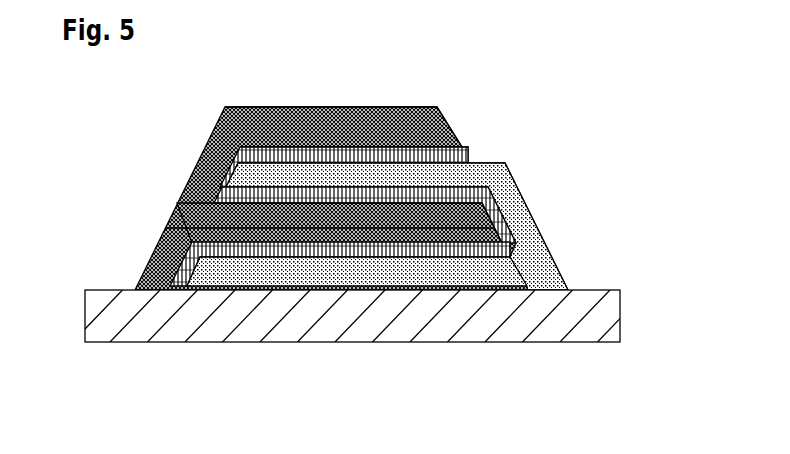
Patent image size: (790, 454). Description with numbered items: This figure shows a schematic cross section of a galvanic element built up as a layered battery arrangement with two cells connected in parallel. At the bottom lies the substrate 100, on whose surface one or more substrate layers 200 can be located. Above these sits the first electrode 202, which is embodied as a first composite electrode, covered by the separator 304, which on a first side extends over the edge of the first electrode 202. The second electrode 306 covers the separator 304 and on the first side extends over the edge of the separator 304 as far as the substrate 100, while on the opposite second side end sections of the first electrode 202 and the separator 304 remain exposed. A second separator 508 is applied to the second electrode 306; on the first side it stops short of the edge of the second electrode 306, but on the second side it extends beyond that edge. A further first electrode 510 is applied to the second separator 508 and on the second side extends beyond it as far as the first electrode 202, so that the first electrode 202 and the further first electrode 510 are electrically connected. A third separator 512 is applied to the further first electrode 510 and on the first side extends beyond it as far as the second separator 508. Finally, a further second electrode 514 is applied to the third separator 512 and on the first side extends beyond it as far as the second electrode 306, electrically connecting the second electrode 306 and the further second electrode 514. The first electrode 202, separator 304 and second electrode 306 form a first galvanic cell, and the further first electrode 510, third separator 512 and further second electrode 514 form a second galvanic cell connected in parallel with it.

The substrate 100 is at (417, 323).
The substrate layer 200 is at (522, 288).
The first electrode 202 is at (552, 266).
The separator 304 is at (517, 250).
The second electrode 306 is at (170, 223).
The second separator 508 is at (467, 188).
The further first electrode 510 is at (482, 168).
The third separator 512 is at (467, 150).
The further second electrode 514 is at (440, 126).